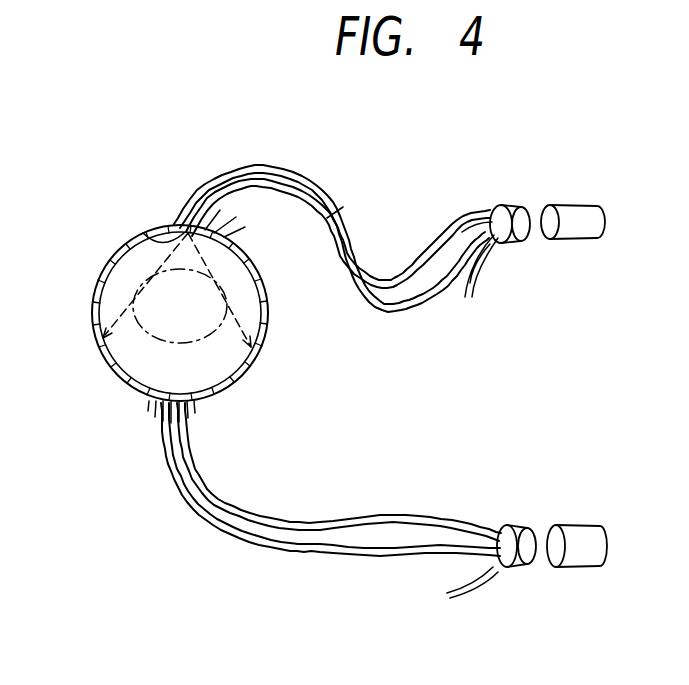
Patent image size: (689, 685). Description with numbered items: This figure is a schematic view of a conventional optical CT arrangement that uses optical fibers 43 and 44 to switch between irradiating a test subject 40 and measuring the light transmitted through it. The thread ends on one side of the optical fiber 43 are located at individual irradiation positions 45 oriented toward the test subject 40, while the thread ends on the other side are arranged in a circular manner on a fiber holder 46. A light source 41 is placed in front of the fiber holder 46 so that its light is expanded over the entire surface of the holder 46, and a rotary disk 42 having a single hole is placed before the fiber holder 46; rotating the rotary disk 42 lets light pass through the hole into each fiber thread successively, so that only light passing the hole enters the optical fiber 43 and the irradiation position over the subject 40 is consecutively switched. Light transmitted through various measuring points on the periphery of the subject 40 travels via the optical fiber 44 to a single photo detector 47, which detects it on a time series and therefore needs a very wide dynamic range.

The test subject 40 is at (157, 338).
The light source 41 is at (598, 206).
The rotary disk 42 is at (521, 206).
The optical fiber 43 is at (313, 181).
The optical fiber 44 is at (274, 518).
The irradiation positions 45 is at (173, 228).
The fiber holder 46 is at (496, 205).
The photo detector 47 is at (575, 525).